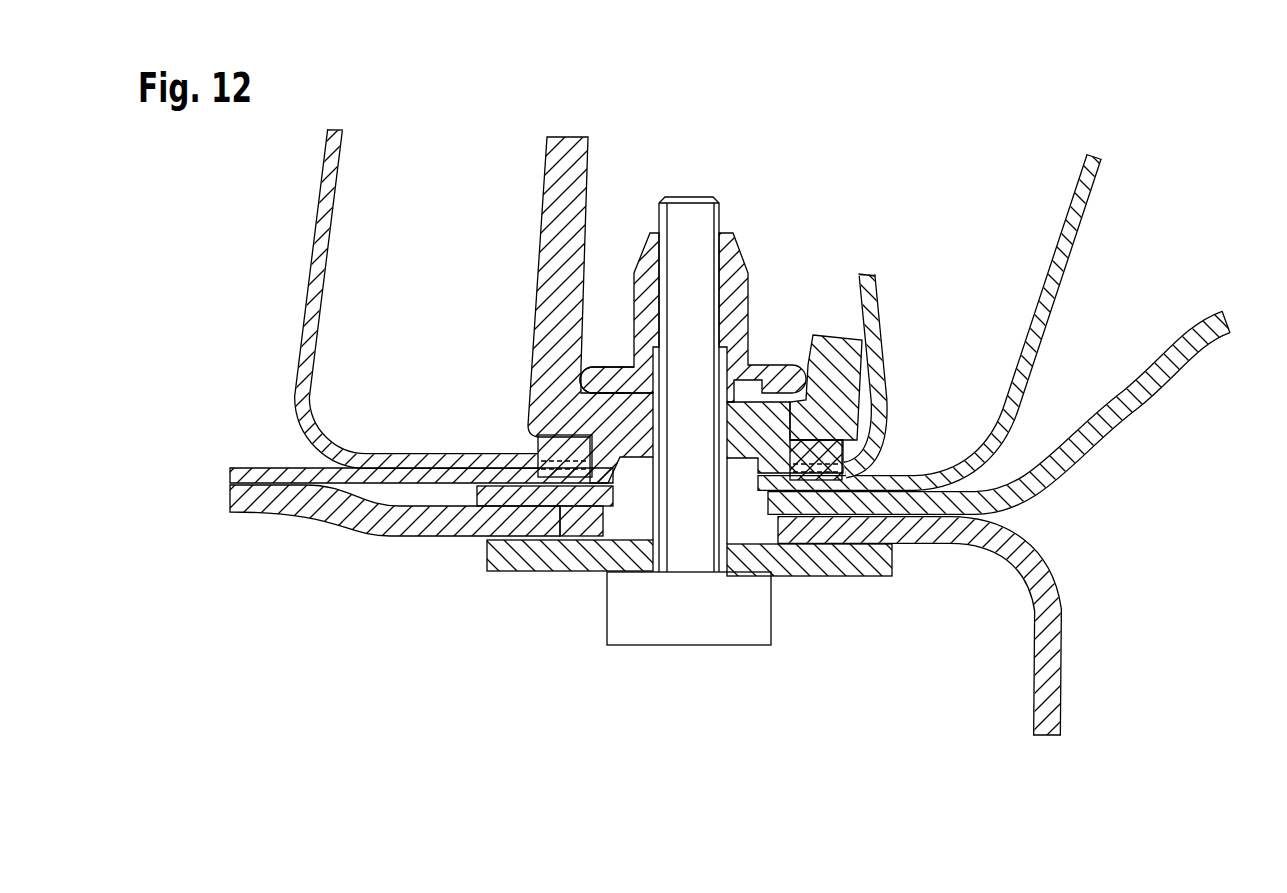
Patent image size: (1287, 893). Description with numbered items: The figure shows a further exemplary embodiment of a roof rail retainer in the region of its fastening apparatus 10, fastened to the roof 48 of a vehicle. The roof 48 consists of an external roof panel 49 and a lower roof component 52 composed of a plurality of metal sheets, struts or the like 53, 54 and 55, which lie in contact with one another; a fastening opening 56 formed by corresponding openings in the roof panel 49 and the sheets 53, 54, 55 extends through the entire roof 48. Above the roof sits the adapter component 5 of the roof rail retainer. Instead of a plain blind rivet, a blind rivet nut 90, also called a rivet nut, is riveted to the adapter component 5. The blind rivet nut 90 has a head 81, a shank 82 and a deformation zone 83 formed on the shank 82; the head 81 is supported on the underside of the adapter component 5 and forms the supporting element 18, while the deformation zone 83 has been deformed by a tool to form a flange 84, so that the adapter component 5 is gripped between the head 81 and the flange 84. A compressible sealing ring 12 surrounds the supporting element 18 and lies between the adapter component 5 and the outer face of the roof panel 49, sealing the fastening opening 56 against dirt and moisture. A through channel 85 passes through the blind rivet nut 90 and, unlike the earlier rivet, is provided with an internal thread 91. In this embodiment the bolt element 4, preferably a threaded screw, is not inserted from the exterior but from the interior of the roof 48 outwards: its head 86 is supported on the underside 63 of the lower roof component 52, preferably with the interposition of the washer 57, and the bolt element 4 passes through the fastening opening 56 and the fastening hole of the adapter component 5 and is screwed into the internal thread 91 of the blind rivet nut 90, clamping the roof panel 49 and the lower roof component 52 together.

The bolt element 4 is at (604, 342).
The adapter component 5 is at (566, 232).
The fastening apparatus 10 is at (509, 310).
The sealing ring 12 is at (540, 443).
The supporting element 18 is at (800, 420).
The roof 48 is at (972, 388).
The roof panel 49 is at (318, 243).
The lower roof component 52 is at (421, 550).
The metal sheet, strut or the like 53 is at (394, 476).
The metal sheet, strut or the like 54 is at (492, 497).
The metal sheet, strut or the like 55 is at (343, 513).
The fastening opening 56 is at (635, 500).
The washer 57 is at (905, 565).
The underside of the lower roof component 63 is at (958, 560).
The head 81 is at (578, 523).
The shank 82 is at (643, 327).
The deformation zone 83 is at (818, 356).
The flange 84 is at (590, 375).
The through channel 85 is at (677, 360).
The head 86 is at (745, 622).
The blind rivet nut 90 is at (668, 346).
The internal thread 91 is at (705, 283).